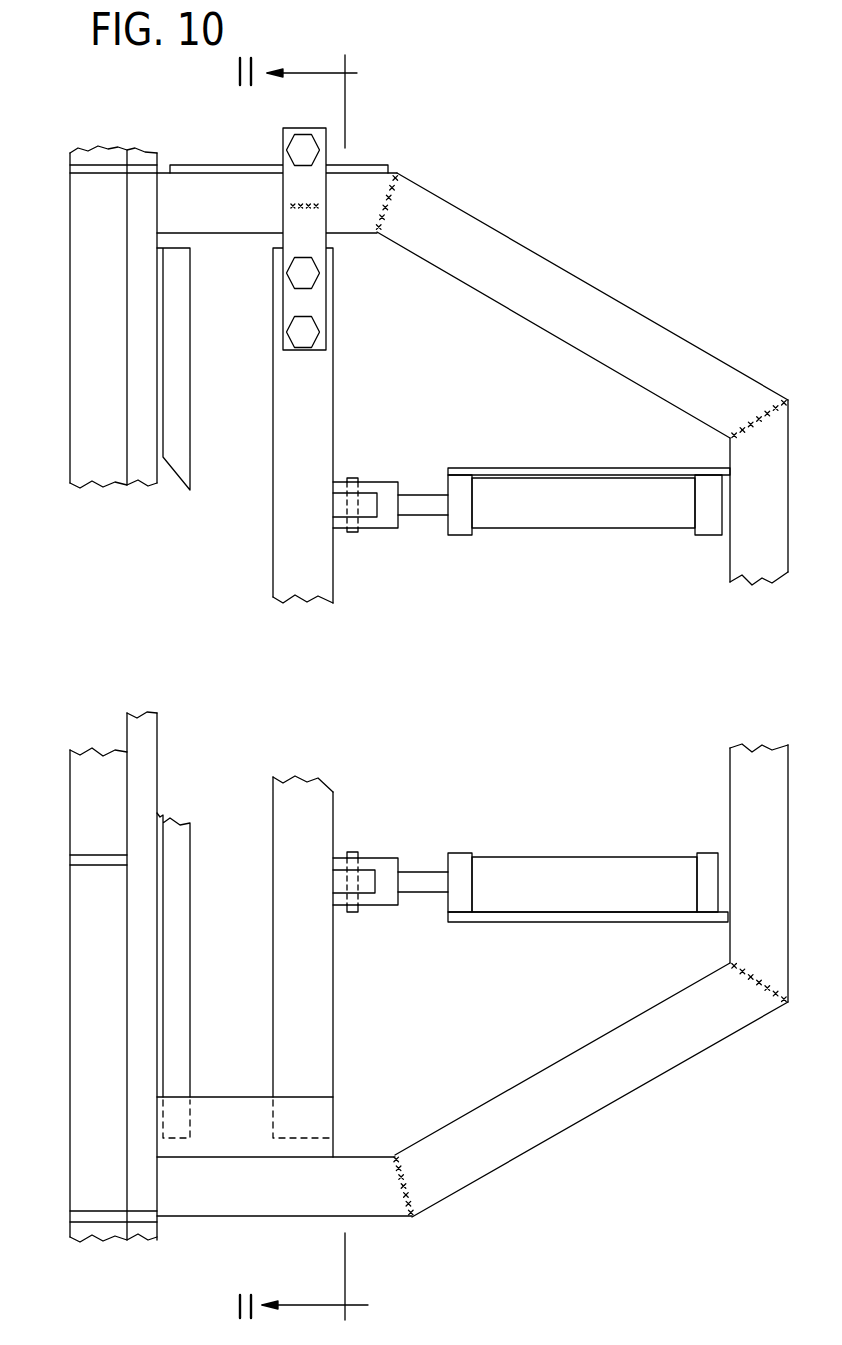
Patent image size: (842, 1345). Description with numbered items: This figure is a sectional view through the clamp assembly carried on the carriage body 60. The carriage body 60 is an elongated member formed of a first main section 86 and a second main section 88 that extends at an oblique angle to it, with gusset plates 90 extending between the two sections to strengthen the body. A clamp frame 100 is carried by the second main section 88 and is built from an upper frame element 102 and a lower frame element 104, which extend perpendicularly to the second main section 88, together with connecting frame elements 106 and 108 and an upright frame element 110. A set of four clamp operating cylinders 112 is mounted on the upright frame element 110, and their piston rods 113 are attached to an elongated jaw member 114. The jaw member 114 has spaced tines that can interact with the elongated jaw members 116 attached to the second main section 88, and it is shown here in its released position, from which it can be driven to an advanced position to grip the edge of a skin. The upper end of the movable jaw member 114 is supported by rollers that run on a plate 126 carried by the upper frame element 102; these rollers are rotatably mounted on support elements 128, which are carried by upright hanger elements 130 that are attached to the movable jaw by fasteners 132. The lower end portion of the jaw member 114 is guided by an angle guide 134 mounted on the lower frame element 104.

The carriage body 60 is at (98, 318).
The first main section 86 is at (89, 213).
The second main section 88 is at (140, 252).
The gusset plates 90 is at (103, 855).
The clamp frame 100 is at (472, 1112).
The upper frame element 102 is at (190, 225).
The lower frame element 104 is at (275, 1200).
The connecting frame element 106 is at (533, 300).
The connecting frame element 108 is at (558, 1085).
The upright frame element 110 is at (743, 800).
The clamp operating cylinders 112 is at (608, 510).
The piston rods 113 is at (425, 882).
The jaw member 114 is at (322, 830).
The jaw members 116 is at (177, 828).
The plate 126 is at (352, 168).
The support elements 128 is at (305, 145).
The hanger elements 130 is at (269, 236).
The fasteners 132 is at (305, 337).
The angle guide 134 is at (202, 1110).